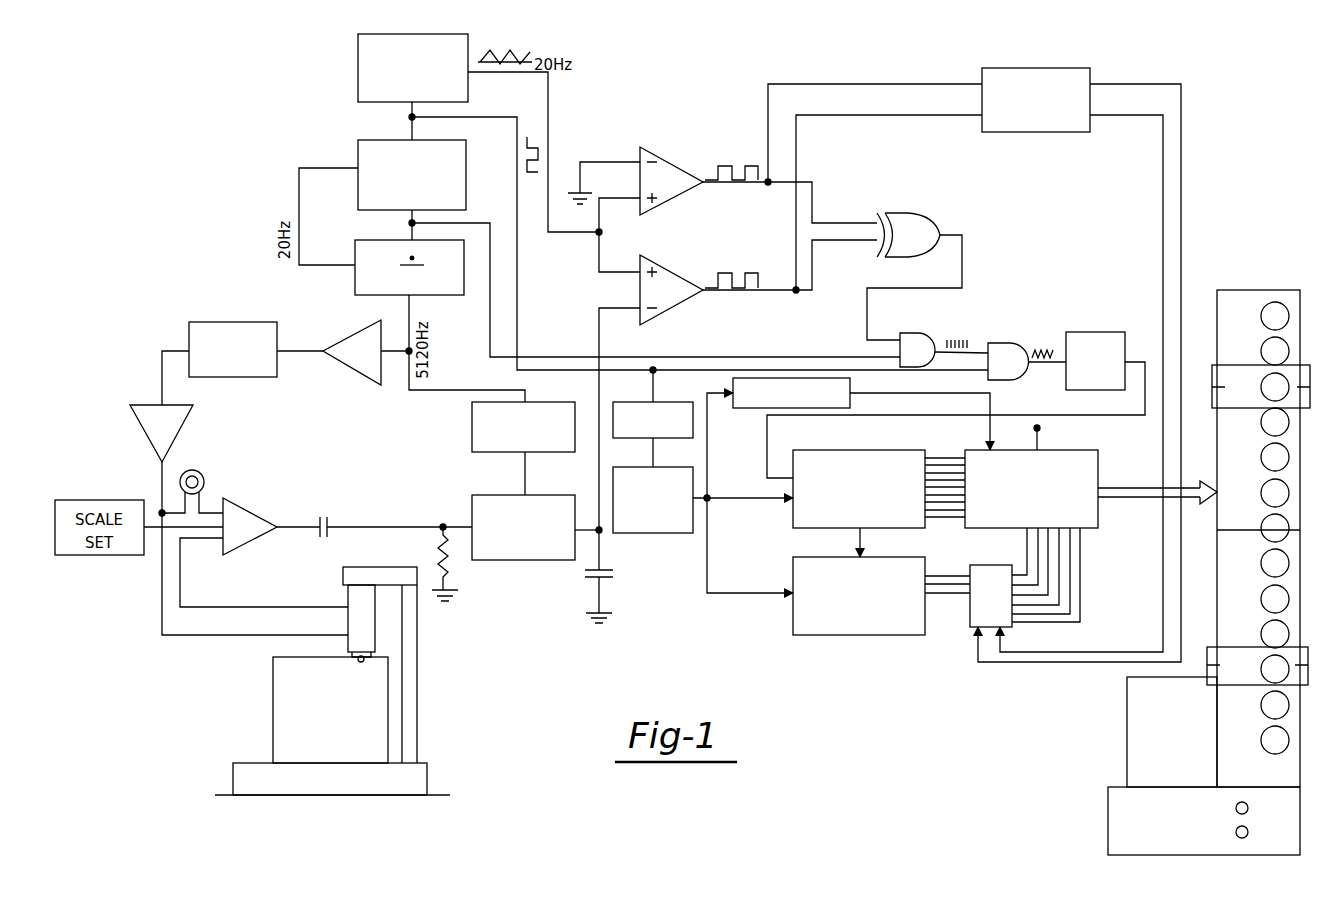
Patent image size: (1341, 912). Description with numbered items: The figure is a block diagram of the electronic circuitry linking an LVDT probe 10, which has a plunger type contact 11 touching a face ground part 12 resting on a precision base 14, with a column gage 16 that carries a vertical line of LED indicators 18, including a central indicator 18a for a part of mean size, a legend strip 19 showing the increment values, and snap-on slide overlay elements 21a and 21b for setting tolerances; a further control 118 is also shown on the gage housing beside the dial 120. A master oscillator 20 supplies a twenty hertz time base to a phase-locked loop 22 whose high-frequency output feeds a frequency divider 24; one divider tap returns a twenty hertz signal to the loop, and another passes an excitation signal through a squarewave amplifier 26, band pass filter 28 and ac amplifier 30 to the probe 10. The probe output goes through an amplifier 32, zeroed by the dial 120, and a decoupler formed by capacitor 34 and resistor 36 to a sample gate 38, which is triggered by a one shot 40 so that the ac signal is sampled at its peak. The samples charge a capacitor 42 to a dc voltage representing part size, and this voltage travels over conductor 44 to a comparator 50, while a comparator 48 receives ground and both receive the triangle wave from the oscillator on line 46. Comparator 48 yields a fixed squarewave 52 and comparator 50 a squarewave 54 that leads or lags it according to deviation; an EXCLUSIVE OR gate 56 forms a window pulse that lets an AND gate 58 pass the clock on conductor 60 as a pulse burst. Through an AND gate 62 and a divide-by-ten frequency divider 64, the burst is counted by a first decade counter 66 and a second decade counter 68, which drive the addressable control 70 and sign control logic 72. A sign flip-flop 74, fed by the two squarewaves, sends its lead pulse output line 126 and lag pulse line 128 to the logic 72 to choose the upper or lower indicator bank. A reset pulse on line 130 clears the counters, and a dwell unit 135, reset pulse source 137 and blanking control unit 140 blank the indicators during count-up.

The LVDT probe 10 is at (345, 594).
The plunger type contact 11 is at (358, 662).
The face ground part 12 is at (273, 690).
The precision base 14 is at (250, 763).
The column gage 16 is at (1228, 290).
The LED indicators 18 is at (1282, 334).
The centrally located indicator 18a is at (1268, 540).
The legend strip 19 is at (1282, 782).
The master oscillator 20 is at (358, 66).
The slide overlay element 21a is at (1248, 390).
The slide overlay element 21b is at (1240, 657).
The phase-locked loop 22 is at (358, 148).
The frequency divider 24 is at (355, 252).
The squarewave amplifier 26 is at (345, 335).
The band pass filter 28 is at (245, 310).
The ac amplifier 30 is at (185, 433).
The amplifier 32 is at (250, 556).
The capacitor 34 is at (330, 516).
The resistor 36 is at (437, 556).
The sample gate 38 is at (520, 565).
The one shot 40 is at (472, 436).
The capacitor 42 is at (605, 580).
The conductor 44 is at (599, 332).
The line 46 is at (548, 108).
The op-amp comparator 48 is at (680, 130).
The op-amp comparator 50 is at (683, 266).
The squarewave 52 is at (745, 165).
The squarewave 54 is at (732, 270).
The EXCLUSIVE OR gate 56 is at (925, 213).
The AND gate 58 is at (912, 333).
The conductor 60 is at (688, 357).
The AND gate 62 is at (1008, 343).
The frequency divider 64 is at (1112, 322).
The first decade counter 66 is at (890, 438).
The second decade counter 68 is at (863, 636).
The addressable control 70 is at (1113, 518).
The sign control logic 72 is at (970, 628).
The sign flip-flop 74 is at (1045, 133).
The indicator lamp 118 is at (1235, 832).
The dial 120 is at (205, 485).
The lead pulse output line 126 is at (1163, 205).
The lag pulse line 128 is at (1181, 232).
The reset line 130 is at (710, 548).
The dwell unit 135 is at (650, 398).
The reset pulse source 137 is at (697, 490).
The blanking control unit 140 is at (745, 410).